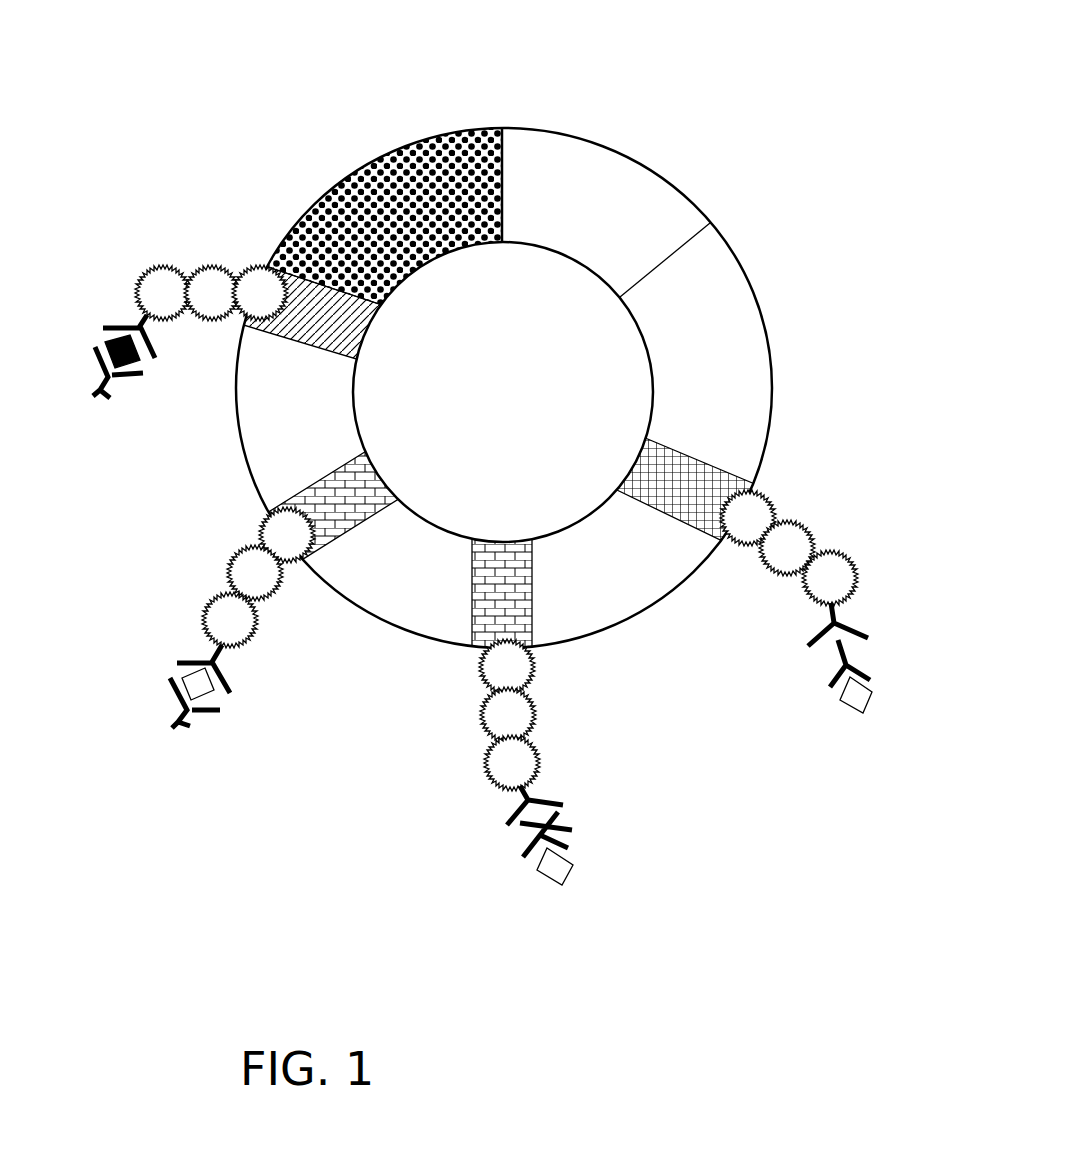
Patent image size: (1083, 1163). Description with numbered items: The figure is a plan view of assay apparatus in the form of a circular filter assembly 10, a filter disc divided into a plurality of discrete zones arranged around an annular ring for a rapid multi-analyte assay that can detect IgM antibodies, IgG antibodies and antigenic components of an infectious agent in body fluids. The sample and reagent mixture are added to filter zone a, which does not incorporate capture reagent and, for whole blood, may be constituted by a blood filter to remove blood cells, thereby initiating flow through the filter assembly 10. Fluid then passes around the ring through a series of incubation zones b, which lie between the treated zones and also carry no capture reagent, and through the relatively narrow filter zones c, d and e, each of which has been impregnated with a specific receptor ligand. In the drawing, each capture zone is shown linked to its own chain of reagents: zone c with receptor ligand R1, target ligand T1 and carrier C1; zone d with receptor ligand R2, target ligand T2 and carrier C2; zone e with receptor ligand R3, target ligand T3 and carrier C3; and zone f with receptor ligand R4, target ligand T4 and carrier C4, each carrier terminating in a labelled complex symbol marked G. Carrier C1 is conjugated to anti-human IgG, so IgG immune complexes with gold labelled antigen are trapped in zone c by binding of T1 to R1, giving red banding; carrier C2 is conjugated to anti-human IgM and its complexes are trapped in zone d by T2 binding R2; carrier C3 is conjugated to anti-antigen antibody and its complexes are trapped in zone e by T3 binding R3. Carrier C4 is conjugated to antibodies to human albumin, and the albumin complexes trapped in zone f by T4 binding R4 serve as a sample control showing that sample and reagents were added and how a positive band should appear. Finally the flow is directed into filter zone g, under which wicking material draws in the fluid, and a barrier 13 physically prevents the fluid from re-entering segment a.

The circular filter assembly 10 is at (705, 177).
The barrier 13 is at (497, 162).
The filter zone 10a a is at (647, 242).
The incubation zones 10b b is at (491, 463).
The filter zone 10c c is at (695, 491).
The filter zone 10d d is at (502, 540).
The filter zone 10e e is at (335, 506).
The filter zone 10f f is at (346, 318).
The filter zone 10g g is at (346, 222).
The receptor ligand R1 is at (748, 518).
The target ligand T1 is at (787, 548).
The carrier C1 is at (830, 578).
The receptor ligand R2 is at (507, 667).
The target ligand T2 is at (508, 715).
The carrier C2 is at (512, 763).
The receptor ligand R3 is at (287, 535).
The target ligand T3 is at (255, 573).
The carrier C3 is at (230, 620).
The receptor ligand R4 is at (260, 293).
The target ligand T4 is at (212, 293).
The carrier C4 is at (163, 293).
The glycan target G is at (102, 390).